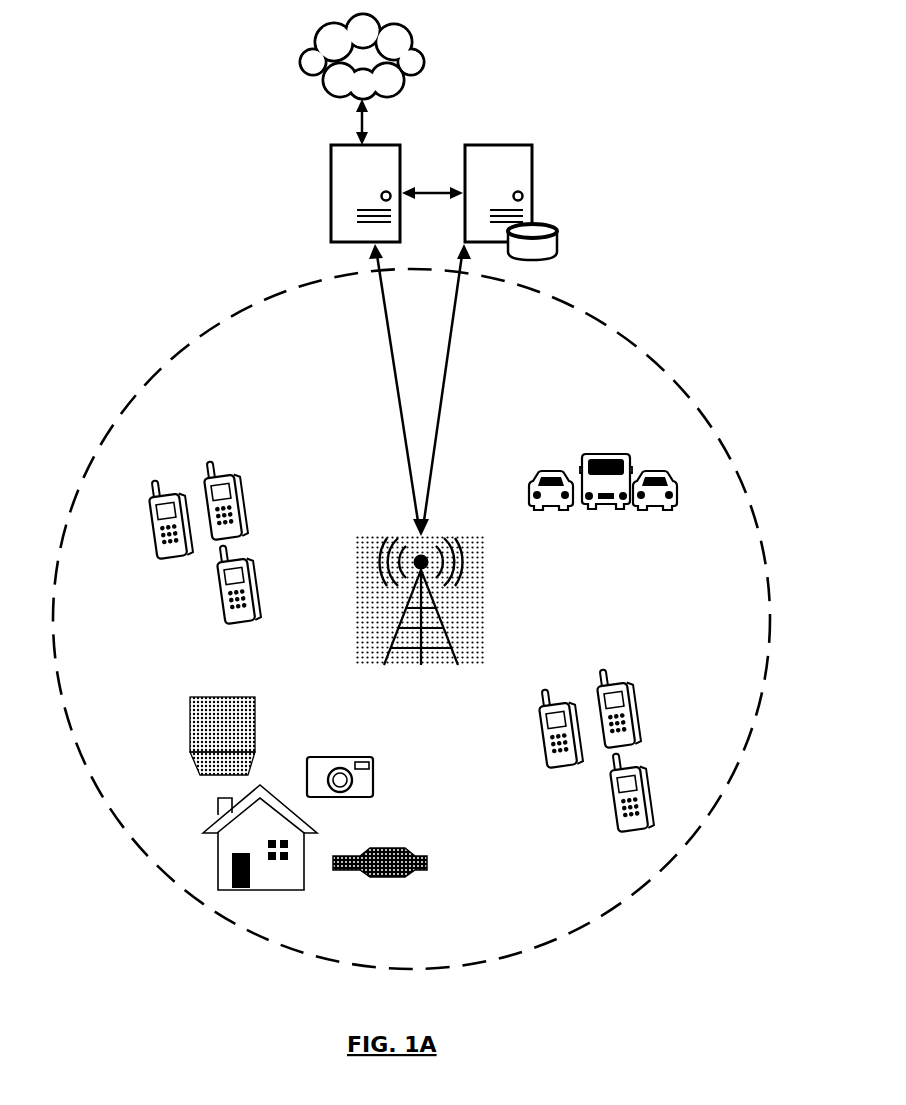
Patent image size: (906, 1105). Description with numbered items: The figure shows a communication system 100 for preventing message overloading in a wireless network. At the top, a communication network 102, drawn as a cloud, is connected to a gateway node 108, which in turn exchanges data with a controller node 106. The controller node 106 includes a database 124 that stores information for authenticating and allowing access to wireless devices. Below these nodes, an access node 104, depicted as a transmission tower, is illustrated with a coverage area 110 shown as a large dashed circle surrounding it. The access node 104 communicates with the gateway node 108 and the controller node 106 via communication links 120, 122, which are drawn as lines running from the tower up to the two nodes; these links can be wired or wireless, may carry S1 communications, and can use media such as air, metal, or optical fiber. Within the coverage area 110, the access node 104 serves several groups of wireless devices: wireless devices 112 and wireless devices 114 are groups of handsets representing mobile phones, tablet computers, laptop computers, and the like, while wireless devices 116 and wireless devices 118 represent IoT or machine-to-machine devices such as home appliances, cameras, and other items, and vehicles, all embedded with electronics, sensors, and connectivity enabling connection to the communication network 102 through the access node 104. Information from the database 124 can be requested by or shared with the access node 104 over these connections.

The communication system 100 is at (478, 78).
The communication network 102 is at (362, 56).
The access node 104 is at (375, 535).
The controller node 106 is at (532, 167).
The gateway node 108 is at (331, 167).
The coverage area 110 is at (167, 333).
The wireless devices 112 is at (615, 633).
The wireless devices 114 is at (226, 421).
The wireless devices 116 is at (298, 726).
The wireless devices 118 is at (563, 436).
The communication link 120 is at (374, 333).
The communication link 122 is at (466, 330).
The database 124 is at (556, 228).